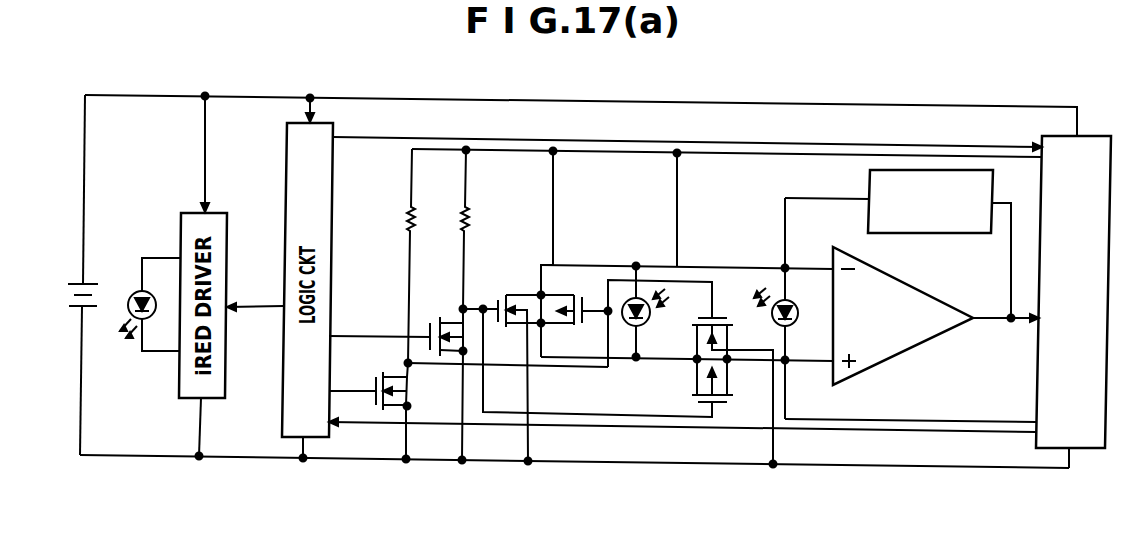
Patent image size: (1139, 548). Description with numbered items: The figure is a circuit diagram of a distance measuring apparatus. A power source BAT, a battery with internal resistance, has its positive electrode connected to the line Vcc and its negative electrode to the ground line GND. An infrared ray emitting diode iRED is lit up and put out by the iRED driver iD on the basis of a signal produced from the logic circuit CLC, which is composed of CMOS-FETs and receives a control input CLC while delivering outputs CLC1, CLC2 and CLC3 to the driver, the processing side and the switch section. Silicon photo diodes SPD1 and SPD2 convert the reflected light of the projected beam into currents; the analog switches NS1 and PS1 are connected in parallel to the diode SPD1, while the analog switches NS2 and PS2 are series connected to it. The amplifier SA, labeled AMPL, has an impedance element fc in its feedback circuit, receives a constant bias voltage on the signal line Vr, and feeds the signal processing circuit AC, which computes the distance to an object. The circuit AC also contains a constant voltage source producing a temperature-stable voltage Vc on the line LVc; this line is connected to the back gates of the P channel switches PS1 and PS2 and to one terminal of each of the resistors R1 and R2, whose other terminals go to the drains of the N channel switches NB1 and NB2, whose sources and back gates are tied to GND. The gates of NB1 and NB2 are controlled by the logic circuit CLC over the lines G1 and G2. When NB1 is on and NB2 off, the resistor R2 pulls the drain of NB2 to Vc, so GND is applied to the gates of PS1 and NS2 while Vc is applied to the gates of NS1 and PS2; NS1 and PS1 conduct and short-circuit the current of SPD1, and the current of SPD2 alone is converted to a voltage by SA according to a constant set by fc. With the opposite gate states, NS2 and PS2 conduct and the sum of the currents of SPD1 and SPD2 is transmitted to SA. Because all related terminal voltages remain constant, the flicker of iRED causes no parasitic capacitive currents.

The positive supply line Vcc is at (160, 94).
The power source BAT is at (97, 292).
The infrared ray emitting diode iRED is at (133, 324).
The iRED driver iD is at (190, 209).
The logic circuit CLC is at (287, 137).
The control signal to iRED driver CLC1 is at (281, 305).
The control signal to signal processing circuit CLC2 is at (334, 139).
The control signal from switch node CLC3 is at (352, 425).
The constant voltage power supply line LVc is at (1000, 158).
The resistor R1 is at (407, 225).
The resistor R2 is at (462, 222).
The signal line G1 is at (332, 390).
The signal line G2 is at (342, 336).
The N-channel analog switch NB1 is at (403, 385).
The N-channel analog switch NB2 is at (435, 322).
The analog switch NS1 is at (500, 297).
The analog switch PS1 is at (580, 327).
The analog switch NS2 is at (733, 322).
The analog switch PS2 is at (692, 397).
The silicon photo diode SPD1 is at (615, 266).
The silicon photo diode SPD2 is at (793, 297).
The amplifier SA is at (903, 326).
The amplifier AMPL is at (874, 323).
The impedance element fc is at (962, 237).
The signal line Vr is at (977, 418).
The signal processing circuit AC is at (1093, 135).
The ground line GND is at (487, 463).